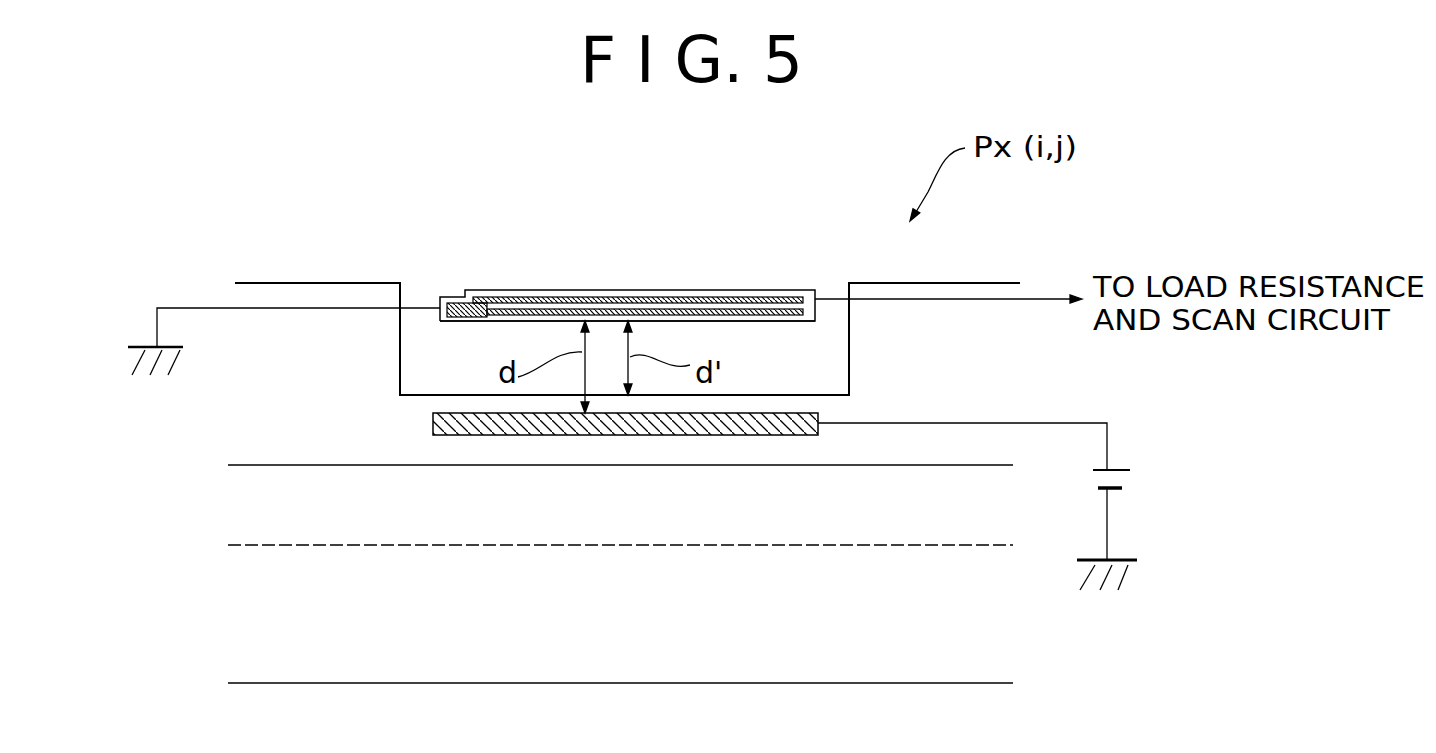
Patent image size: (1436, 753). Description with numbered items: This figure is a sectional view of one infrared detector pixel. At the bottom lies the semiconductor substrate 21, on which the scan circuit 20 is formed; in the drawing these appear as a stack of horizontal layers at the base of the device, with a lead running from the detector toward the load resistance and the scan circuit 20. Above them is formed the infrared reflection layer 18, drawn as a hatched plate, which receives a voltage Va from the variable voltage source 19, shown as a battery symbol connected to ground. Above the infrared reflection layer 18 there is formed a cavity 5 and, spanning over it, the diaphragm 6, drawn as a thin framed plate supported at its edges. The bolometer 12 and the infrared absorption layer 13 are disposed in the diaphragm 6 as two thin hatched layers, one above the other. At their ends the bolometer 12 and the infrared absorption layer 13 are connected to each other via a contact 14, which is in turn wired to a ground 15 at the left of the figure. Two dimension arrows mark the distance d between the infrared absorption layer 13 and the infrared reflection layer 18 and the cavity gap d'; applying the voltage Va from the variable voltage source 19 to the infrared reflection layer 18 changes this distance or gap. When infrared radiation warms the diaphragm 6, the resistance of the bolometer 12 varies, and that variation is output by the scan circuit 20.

The cavity 5 is at (553, 345).
The diaphragm 6 is at (503, 290).
The bolometer 12 is at (745, 296).
The infrared absorption layer 13 is at (817, 313).
The contact 14 is at (455, 302).
The ground 15 is at (128, 347).
The infrared reflection layer 18 is at (432, 430).
The variable voltage source 19 is at (1133, 467).
The scan circuit 20 is at (250, 510).
The semiconductor substrate 21 is at (267, 623).